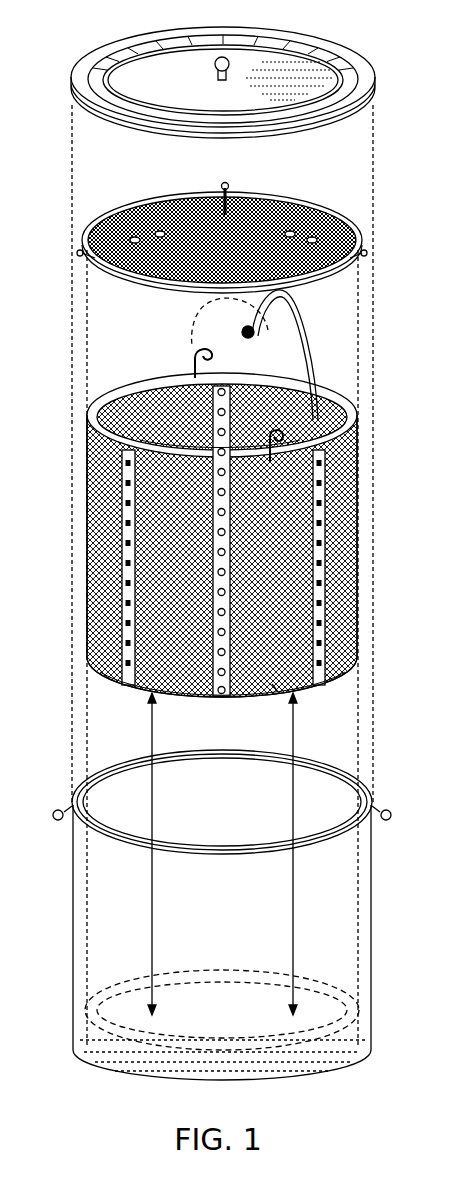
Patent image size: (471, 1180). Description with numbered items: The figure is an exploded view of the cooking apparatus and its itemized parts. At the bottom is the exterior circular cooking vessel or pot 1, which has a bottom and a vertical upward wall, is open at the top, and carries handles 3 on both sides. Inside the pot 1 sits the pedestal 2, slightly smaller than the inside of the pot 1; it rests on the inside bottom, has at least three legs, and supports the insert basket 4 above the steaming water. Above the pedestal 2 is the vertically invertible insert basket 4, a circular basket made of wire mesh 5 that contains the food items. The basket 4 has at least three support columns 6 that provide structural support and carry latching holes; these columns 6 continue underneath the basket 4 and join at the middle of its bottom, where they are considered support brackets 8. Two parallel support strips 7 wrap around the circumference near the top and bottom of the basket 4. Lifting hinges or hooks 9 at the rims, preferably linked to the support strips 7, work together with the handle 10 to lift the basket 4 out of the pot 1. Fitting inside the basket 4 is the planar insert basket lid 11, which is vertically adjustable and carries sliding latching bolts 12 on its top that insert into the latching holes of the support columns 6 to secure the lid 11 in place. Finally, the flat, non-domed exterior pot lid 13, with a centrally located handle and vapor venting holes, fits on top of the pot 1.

The cooking vessel or pot 1 is at (72, 915).
The pedestal 2 is at (320, 1000).
The handles 3 is at (52, 815).
The insert basket 4 is at (227, 535).
The mesh 5 is at (277, 690).
The support columns 6 is at (88, 540).
The support strips 7 is at (88, 495).
The support brackets 8 is at (188, 696).
The lifting hinges or hooks 9 is at (192, 366).
The handle 10 is at (325, 352).
The insert basket lid 11 is at (185, 285).
The sliding latching bolts 12 is at (165, 200).
The exterior pot lid 13 is at (311, 33).